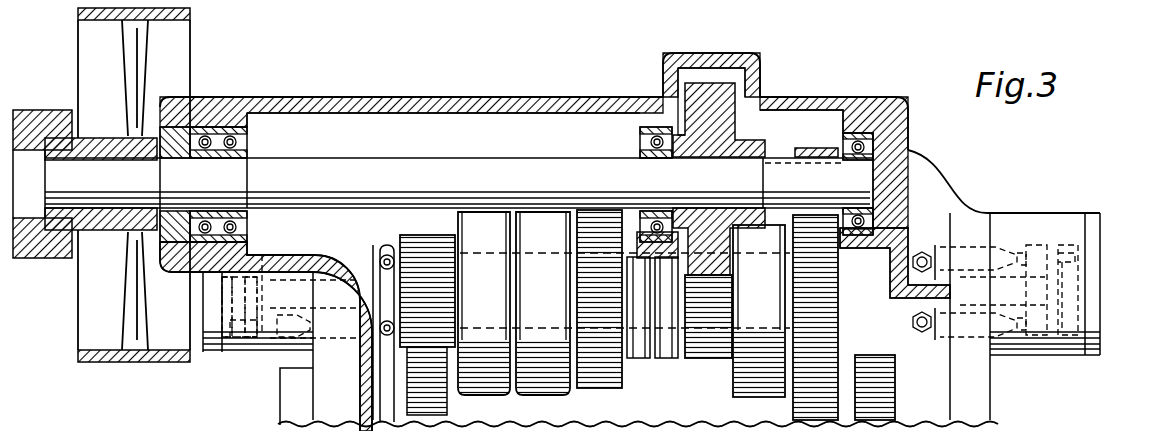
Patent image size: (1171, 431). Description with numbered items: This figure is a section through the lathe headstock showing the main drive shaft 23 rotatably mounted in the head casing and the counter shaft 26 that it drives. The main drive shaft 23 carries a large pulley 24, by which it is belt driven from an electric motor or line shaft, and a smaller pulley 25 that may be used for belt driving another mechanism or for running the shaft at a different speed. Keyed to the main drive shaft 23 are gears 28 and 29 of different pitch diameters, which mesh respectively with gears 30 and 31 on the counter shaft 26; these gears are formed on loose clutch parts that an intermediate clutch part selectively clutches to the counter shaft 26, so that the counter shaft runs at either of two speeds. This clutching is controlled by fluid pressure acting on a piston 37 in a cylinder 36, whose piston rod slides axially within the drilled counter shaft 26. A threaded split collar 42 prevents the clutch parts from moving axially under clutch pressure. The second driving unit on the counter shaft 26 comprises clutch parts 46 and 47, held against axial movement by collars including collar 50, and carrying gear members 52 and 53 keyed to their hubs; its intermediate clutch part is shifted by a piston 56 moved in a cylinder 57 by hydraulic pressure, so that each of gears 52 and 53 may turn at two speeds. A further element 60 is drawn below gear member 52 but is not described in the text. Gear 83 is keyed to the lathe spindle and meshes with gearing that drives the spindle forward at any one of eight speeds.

The main drive shaft 23 is at (520, 165).
The pulley 24 is at (180, 38).
The smaller pulley 25 is at (30, 120).
The counter shaft 26 is at (758, 268).
The gear 28 is at (740, 93).
The gear 29 is at (812, 148).
The gear 30 is at (706, 360).
The gear 31 is at (832, 300).
The cylinder 36 is at (1037, 245).
The piston 37 is at (1053, 245).
The collar 42 is at (666, 360).
The clutch part 46 is at (490, 383).
The clutch part 47 is at (546, 383).
The collar 50 is at (637, 360).
The gear member 52 is at (452, 262).
The gear member 53 is at (600, 385).
The piston 56 is at (252, 337).
The cylinder 57 is at (233, 337).
The gear 60 is at (418, 400).
The gear 83 is at (878, 405).